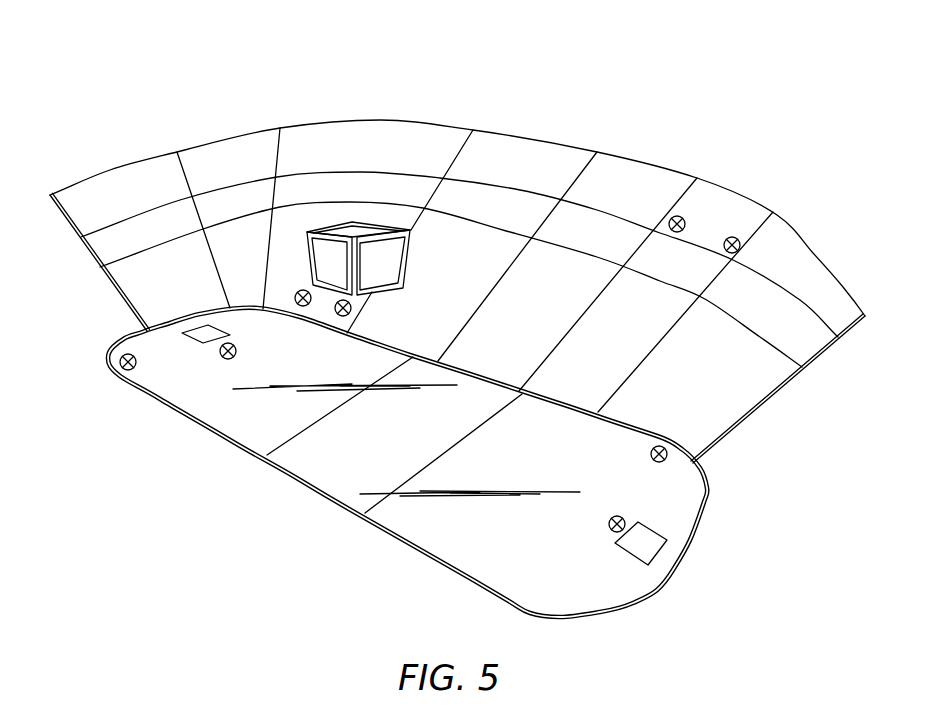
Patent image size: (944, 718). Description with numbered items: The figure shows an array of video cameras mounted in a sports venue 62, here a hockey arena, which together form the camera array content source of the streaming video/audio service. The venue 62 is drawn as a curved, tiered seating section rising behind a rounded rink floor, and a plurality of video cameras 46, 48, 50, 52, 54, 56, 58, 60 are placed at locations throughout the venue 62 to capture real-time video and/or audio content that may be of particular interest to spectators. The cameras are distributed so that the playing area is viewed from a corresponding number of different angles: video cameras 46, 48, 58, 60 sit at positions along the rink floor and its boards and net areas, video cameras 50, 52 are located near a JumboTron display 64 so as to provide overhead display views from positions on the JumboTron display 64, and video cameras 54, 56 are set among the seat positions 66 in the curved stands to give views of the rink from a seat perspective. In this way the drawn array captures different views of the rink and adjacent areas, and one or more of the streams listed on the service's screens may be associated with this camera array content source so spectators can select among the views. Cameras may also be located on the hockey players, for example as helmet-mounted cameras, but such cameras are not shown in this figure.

The venue 62 is at (457, 251).
The seat positions 66 is at (738, 205).
The JumboTron display 64 is at (387, 262).
The video camera 46 is at (137, 361).
The video camera 48 is at (237, 351).
The video camera 50 is at (295, 298).
The video camera 52 is at (347, 330).
The video camera 54 is at (686, 224).
The video camera 56 is at (736, 237).
The video camera 58 is at (650, 453).
The video camera 60 is at (608, 524).